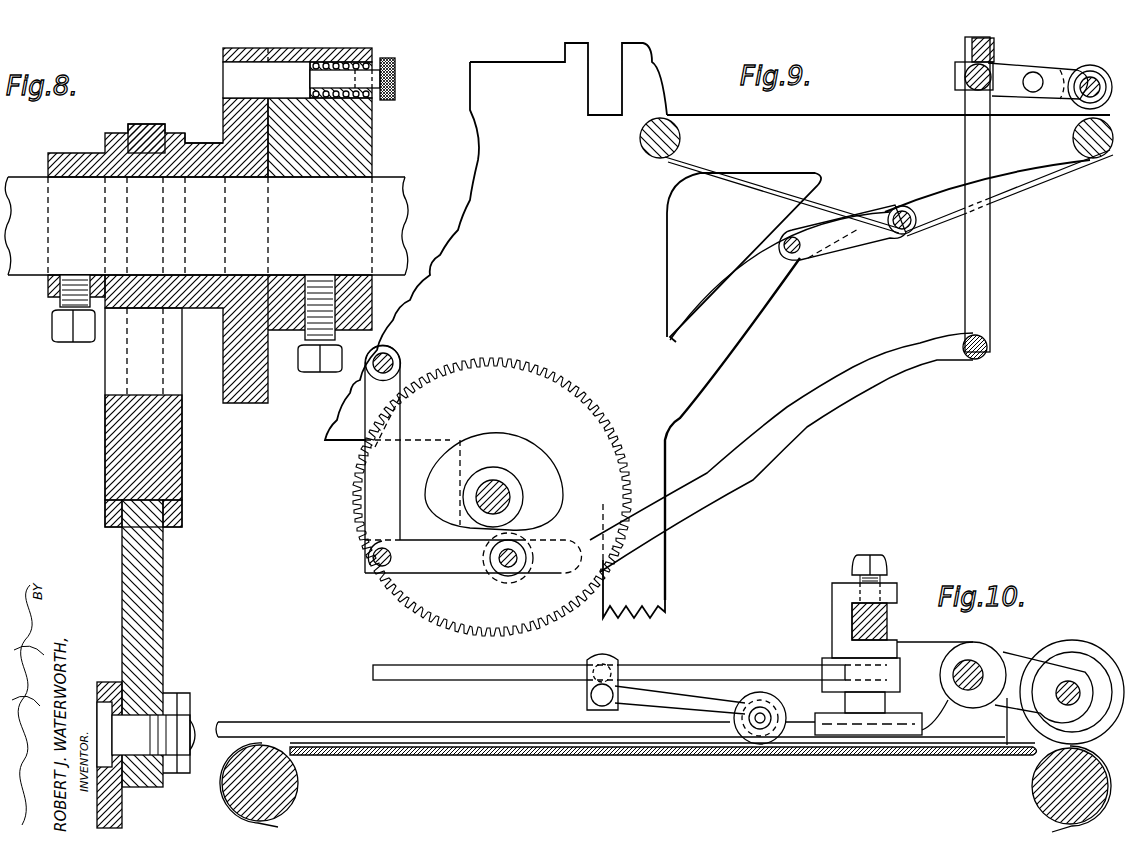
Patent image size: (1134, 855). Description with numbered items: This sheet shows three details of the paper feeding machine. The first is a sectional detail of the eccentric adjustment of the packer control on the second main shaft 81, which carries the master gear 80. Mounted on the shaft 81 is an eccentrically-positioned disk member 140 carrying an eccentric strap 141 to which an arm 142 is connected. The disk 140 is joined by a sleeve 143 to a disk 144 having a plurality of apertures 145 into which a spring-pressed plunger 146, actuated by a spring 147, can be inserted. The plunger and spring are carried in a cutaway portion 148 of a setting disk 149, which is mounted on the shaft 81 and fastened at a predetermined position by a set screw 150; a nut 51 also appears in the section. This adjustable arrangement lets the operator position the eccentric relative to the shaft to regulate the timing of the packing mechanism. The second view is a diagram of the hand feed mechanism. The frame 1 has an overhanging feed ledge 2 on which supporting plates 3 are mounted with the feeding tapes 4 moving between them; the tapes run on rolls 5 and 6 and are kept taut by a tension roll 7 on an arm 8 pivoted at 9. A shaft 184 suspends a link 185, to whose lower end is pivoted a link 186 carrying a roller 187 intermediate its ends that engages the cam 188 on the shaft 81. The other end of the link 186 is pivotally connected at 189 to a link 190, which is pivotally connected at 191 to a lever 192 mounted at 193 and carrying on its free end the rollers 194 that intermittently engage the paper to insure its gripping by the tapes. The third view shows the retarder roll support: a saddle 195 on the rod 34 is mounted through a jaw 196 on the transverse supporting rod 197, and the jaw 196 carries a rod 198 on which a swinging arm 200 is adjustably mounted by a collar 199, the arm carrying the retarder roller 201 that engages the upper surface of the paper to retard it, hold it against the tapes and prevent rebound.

In FIG. 9, the frame 1 is at (652, 583).
In FIG. 9, the overhanging feed ledge 2 is at (892, 140).
In FIG. 10, the supporting plates 3 is at (456, 757).
In FIG. 9, the feeding tapes 4 is at (1005, 190).
In FIG. 10, the feeding tapes 4 is at (487, 745).
In FIG. 9, the roll 5 is at (1078, 142).
In FIG. 10, the roll 5 is at (1045, 786).
In FIG. 9, the roll 6 is at (681, 138).
In FIG. 10, the roll 6 is at (283, 797).
In FIG. 9, the tension roll 7 is at (901, 237).
In FIG. 9, the arm 8 is at (831, 250).
In FIG. 9, the pivot 9 is at (792, 258).
In FIG. 10, the rod 34 is at (346, 703).
In FIG. 8, the nut 51 is at (48, 291).
In FIG. 9, the master gear 80 is at (583, 397).
In FIG. 8, the second main shaft 81 is at (22, 185).
In FIG. 9, the second main shaft 81 is at (497, 489).
In FIG. 8, the eccentrically-positioned disk member 140 is at (105, 434).
In FIG. 8, the eccentric strap 141 is at (143, 133).
In FIG. 8, the arm 142 is at (104, 683).
In FIG. 8, the sleeve 143 is at (204, 142).
In FIG. 8, the disk 144 is at (251, 404).
In FIG. 8, the apertures 145 is at (240, 50).
In FIG. 8, the spring-pressed plunger 146 is at (232, 86).
In FIG. 8, the spring 147 is at (373, 128).
In FIG. 8, the cutaway portion 148 is at (367, 104).
In FIG. 8, the setting disk 149 is at (355, 151).
In FIG. 8, the set screw 150 is at (322, 373).
In FIG. 9, the shaft 184 is at (393, 358).
In FIG. 9, the link 185 is at (372, 470).
In FIG. 9, the link 186 is at (427, 556).
In FIG. 9, the roller 187 is at (509, 579).
In FIG. 9, the cam 188 is at (540, 478).
In FIG. 9, the pivotal connection 189 is at (989, 350).
In FIG. 9, the link 190 is at (992, 296).
In FIG. 9, the pivotal connection 191 is at (965, 80).
In FIG. 9, the lever 192 is at (992, 83).
In FIG. 9, the lever mounting 193 is at (1048, 64).
In FIG. 9, the rollers 194 is at (1072, 99).
In FIG. 10, the rollers 194 is at (1075, 656).
In FIG. 10, the saddle 195 is at (835, 736).
In FIG. 10, the jaw 196 is at (832, 632).
In FIG. 10, the transverse supporting rod 197 is at (852, 612).
In FIG. 10, the rod 198 is at (720, 676).
In FIG. 10, the collar 199 is at (590, 692).
In FIG. 10, the swinging arm 200 is at (689, 710).
In FIG. 10, the retarder roller 201 is at (752, 742).